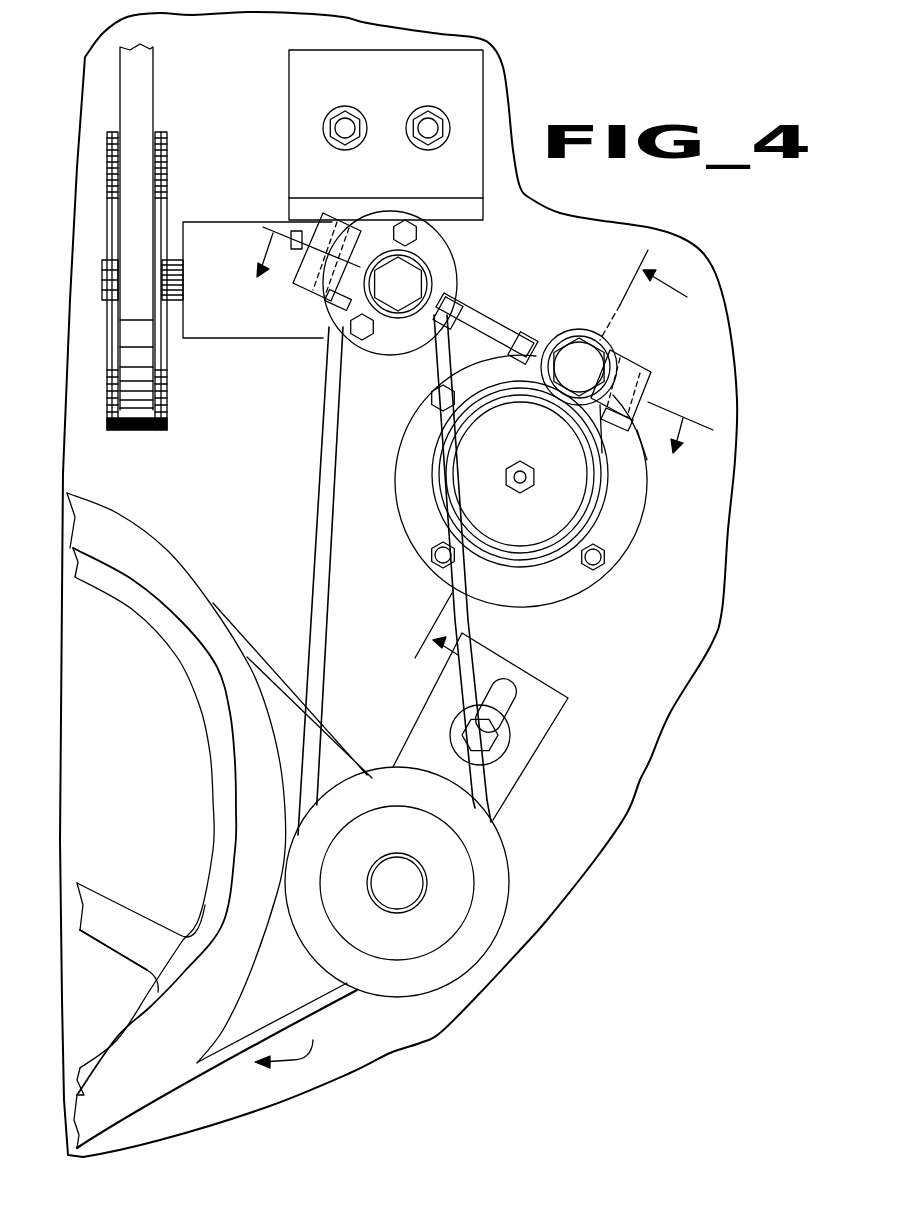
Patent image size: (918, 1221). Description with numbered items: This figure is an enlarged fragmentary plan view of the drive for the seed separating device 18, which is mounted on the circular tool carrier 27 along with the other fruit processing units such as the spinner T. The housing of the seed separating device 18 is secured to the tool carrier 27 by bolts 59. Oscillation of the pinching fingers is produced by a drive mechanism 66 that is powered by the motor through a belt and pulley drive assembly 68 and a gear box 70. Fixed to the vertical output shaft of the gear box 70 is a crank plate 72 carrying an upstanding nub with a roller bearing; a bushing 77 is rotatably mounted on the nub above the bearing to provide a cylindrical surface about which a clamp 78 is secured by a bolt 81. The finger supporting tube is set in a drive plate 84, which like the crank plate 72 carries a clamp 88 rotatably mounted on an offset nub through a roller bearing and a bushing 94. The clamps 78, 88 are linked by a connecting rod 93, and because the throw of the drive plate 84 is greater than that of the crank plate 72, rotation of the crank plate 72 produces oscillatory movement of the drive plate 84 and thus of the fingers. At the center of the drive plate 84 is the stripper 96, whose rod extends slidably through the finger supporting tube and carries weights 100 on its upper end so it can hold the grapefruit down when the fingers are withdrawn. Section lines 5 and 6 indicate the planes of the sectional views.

The seed separating device 18 is at (653, 497).
The tool carrier 27 is at (710, 607).
The bolts 59 is at (432, 553).
The drive mechanism 66 is at (538, 284).
The belt and pulley drive assembly 68 is at (143, 87).
The gear box 70 is at (228, 307).
The crank plate 72 is at (438, 243).
The bushing 77 is at (423, 268).
The clamp 78 is at (440, 282).
The bolt 81 is at (340, 307).
The drive plate 84 is at (527, 383).
The clamp 88 is at (618, 353).
The connecting rod 93 is at (490, 325).
The bushing 94 is at (607, 342).
The stripper 96 is at (545, 553).
The weights 100 is at (545, 445).
The section line 5- 5 is at (551, 466).
The section line 6- 6 is at (473, 346).
The spinner T is at (289, 1051).